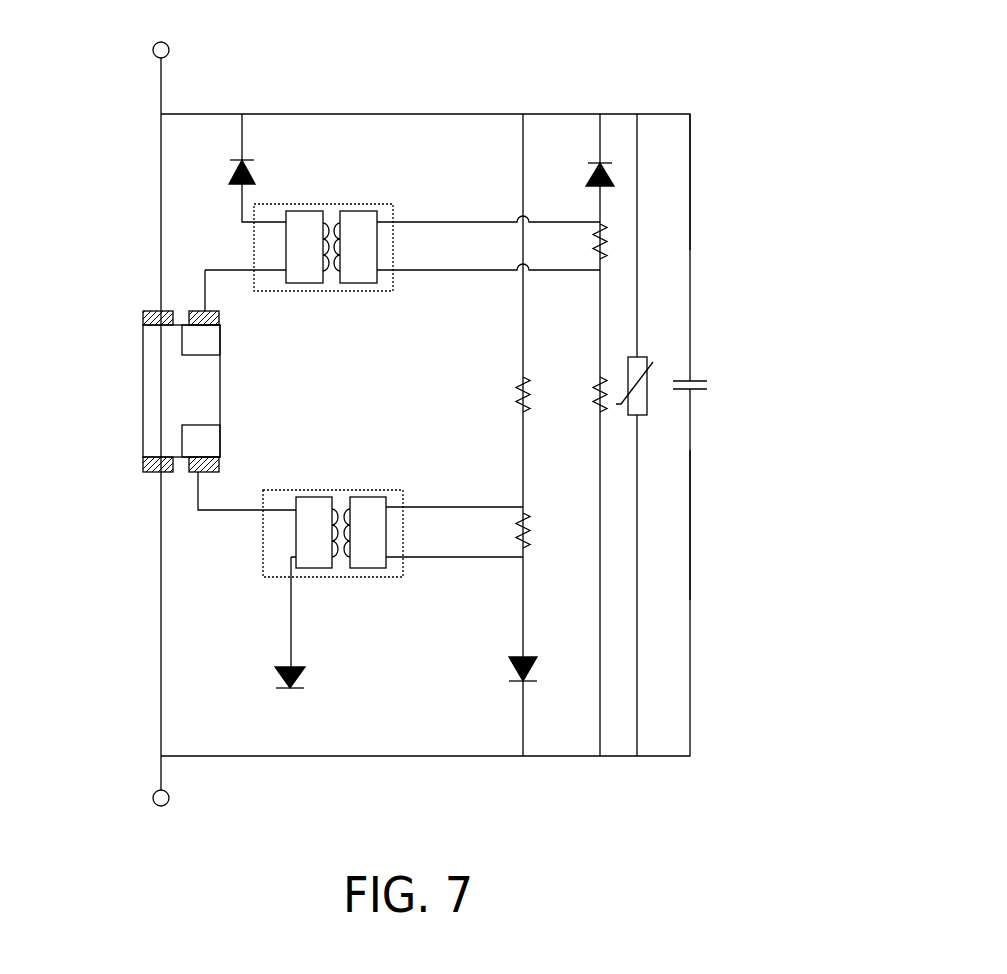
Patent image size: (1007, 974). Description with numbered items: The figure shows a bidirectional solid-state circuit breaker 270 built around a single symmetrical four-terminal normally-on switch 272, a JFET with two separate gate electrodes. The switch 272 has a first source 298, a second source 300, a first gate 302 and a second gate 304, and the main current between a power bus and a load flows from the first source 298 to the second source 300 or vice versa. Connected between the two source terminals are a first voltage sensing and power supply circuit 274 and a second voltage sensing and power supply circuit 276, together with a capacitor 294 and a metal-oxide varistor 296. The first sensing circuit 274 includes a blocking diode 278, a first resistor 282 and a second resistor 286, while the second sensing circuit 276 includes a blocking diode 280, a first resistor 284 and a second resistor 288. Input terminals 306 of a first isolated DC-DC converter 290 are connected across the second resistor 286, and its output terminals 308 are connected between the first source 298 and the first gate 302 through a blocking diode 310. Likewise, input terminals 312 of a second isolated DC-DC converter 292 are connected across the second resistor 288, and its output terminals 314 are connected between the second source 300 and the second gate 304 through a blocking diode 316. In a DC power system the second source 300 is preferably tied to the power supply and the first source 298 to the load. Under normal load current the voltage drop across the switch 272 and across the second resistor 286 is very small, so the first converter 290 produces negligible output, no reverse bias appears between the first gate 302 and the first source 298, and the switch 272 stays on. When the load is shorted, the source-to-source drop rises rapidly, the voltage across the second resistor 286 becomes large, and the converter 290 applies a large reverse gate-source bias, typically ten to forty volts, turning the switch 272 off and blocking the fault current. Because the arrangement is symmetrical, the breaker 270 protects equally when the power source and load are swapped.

The bidirectional solid-state circuit breaker 270 is at (548, 58).
The symmetrical four-terminal normally-on switch 272 is at (153, 423).
The first voltage sensing and power supply circuit 274 is at (712, 540).
The second voltage sensing and power supply circuit 276 is at (712, 210).
The blocking diode 278 is at (526, 657).
The blocking diode 280 is at (606, 163).
The first resistor 282 is at (520, 380).
The first resistor 284 is at (598, 405).
The second resistor 286 is at (560, 522).
The second resistor 288 is at (606, 251).
The first isolated DC-DC converter 290 is at (385, 490).
The second isolated DC-DC converter 292 is at (387, 204).
The capacitor 294 is at (697, 380).
The metal-oxide varistor 296 is at (645, 392).
The first source 298 is at (143, 468).
The second source 300 is at (143, 316).
The first gate 302 is at (219, 462).
The second gate 304 is at (219, 313).
The input terminals 306 is at (403, 507).
The output terminals 308 is at (263, 510).
The blocking diode 310 is at (293, 667).
The input terminals of the second isolated DC-DC converter 312 is at (397, 222).
The output terminals 314 is at (254, 222).
The blocking diode 316 is at (244, 160).